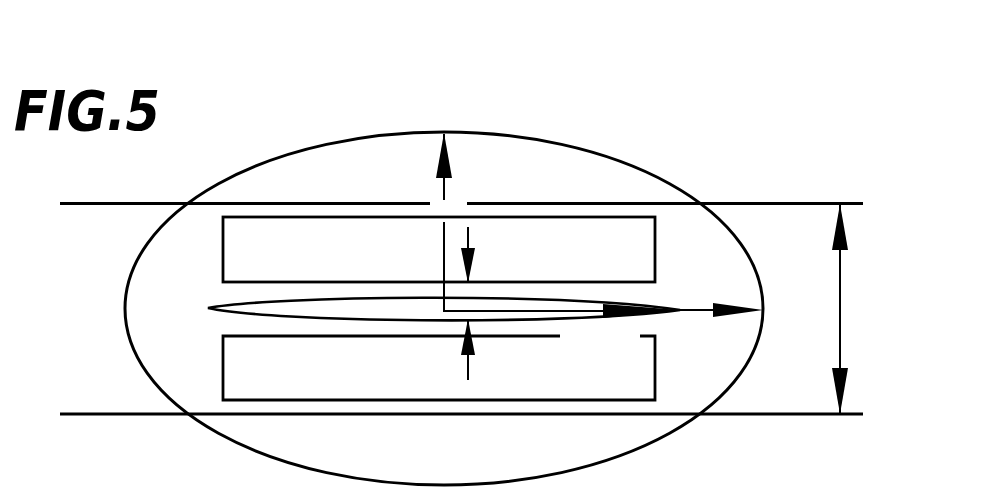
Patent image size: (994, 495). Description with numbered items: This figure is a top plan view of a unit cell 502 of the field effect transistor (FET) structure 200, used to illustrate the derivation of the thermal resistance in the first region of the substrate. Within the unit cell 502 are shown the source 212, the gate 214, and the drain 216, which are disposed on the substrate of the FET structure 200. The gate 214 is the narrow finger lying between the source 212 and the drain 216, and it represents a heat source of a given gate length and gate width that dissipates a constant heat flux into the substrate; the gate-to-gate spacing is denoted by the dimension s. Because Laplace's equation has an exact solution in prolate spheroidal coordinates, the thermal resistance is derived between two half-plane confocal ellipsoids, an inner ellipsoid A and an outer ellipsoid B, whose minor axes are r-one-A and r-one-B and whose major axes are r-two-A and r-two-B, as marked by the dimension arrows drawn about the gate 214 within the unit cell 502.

The field effect transistor (FET) structure 200 is at (728, 70).
The unit cell 502 is at (133, 272).
The drain 216 is at (655, 236).
The source 212 is at (655, 380).
The gate 214 is at (208, 308).